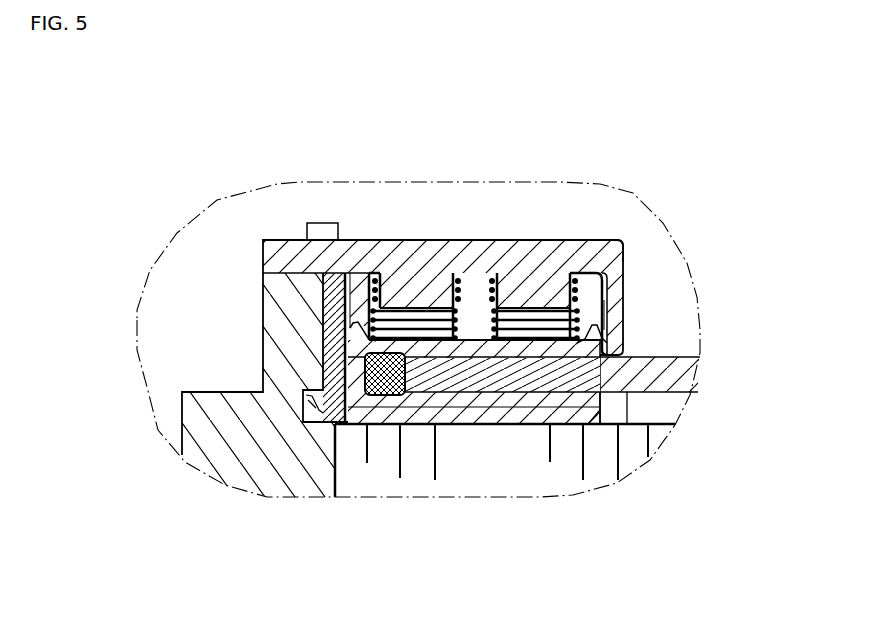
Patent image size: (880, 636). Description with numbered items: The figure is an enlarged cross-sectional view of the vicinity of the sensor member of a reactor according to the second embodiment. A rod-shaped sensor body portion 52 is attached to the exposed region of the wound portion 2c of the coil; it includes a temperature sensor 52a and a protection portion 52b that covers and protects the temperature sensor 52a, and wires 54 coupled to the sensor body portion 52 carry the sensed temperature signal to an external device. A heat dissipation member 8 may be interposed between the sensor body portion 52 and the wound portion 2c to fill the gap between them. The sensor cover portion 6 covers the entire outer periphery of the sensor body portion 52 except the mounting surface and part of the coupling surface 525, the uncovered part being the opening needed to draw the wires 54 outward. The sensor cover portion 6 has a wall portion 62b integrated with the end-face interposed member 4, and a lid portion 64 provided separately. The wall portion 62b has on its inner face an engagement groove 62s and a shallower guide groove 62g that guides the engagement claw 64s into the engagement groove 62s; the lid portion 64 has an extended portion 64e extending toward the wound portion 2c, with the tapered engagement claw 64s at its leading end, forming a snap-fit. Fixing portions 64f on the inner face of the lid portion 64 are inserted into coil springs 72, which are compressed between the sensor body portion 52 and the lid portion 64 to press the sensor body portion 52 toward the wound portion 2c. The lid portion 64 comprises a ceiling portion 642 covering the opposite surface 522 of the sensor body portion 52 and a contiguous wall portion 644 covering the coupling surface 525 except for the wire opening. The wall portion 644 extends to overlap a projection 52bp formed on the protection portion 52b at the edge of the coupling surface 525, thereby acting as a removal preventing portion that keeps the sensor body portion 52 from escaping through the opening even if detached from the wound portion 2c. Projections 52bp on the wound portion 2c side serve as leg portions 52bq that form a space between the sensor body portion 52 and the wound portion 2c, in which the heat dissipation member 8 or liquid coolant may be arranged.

The wound portion 2c is at (590, 465).
The end-face interposed member 4 is at (250, 432).
The sensor cover portion 6 is at (293, 232).
The heat dissipation member 8 is at (519, 440).
The sensor body portion 52 is at (495, 577).
The temperature sensor 52a is at (385, 440).
The protection portion 52b is at (456, 440).
The projection 52bp is at (348, 336).
The leg portion 52bq is at (188, 401).
The opposite surface 522 is at (470, 340).
The coupling surface 525 is at (640, 398).
The wires 54 is at (672, 365).
The wall portion 62b is at (263, 297).
The guide groove 62g is at (358, 293).
The engagement groove 62s is at (318, 420).
The lid portion 64 is at (508, 226).
The extended portion 64e is at (337, 333).
The fixing portion 64f is at (414, 297).
The engagement claw 64s is at (335, 426).
The ceiling portion 642 is at (597, 240).
The wall portion 644 is at (612, 323).
The coil spring 72 is at (371, 275).